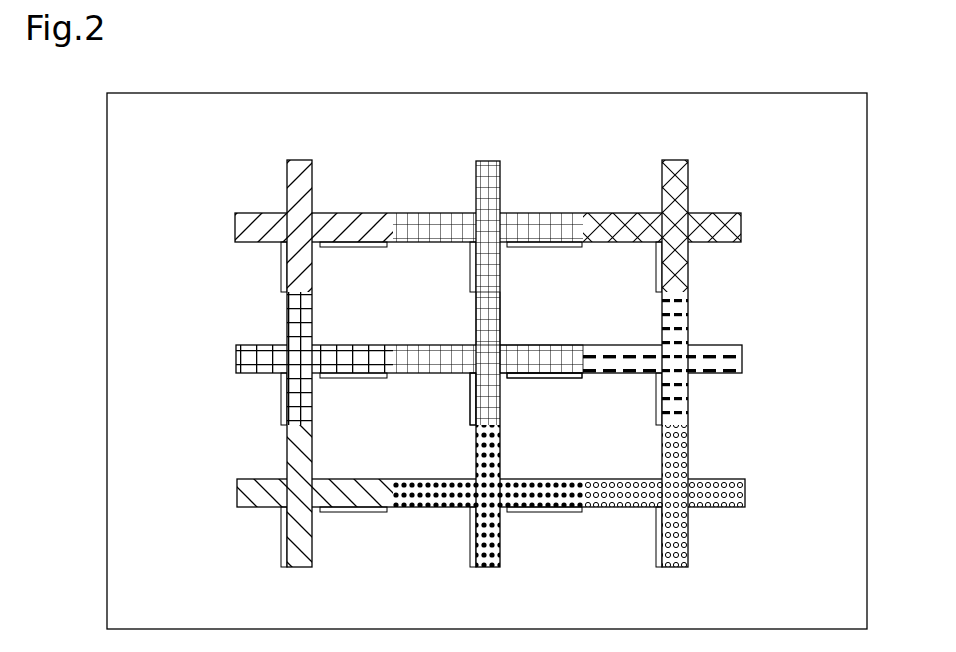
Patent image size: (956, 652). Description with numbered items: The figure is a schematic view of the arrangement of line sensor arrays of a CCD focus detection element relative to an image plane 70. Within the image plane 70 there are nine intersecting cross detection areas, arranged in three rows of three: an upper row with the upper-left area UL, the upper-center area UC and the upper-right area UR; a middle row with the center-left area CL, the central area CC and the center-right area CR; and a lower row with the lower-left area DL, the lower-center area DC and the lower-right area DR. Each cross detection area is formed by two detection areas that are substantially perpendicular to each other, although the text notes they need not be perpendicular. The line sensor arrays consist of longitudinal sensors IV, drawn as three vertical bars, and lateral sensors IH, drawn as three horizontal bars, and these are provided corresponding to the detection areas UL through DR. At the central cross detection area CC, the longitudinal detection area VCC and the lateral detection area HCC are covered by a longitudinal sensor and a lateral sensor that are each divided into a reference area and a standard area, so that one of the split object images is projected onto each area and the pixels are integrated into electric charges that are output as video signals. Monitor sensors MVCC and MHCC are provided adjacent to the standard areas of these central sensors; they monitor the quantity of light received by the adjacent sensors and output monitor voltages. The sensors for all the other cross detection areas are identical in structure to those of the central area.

The image plane 70 is at (596, 104).
The longitudinal sensor IV is at (473, 343).
The lateral sensor IH is at (234, 225).
The upper-left cross detection area UL is at (270, 175).
The upper-center cross detection area UC is at (468, 177).
The upper-right cross detection area UR is at (652, 177).
The center-left cross detection area CL is at (282, 320).
The central cross detection area CC is at (467, 320).
The center-right cross detection area CR is at (653, 322).
The lower-left cross detection area DL is at (273, 457).
The lower-center cross detection area DC is at (472, 462).
The lower-right cross detection area DR is at (658, 458).
The longitudinal detection area VCC is at (497, 318).
The lateral detection area HCC is at (528, 358).
The monitor sensor MVCC is at (472, 399).
The monitor sensor MHCC is at (537, 379).